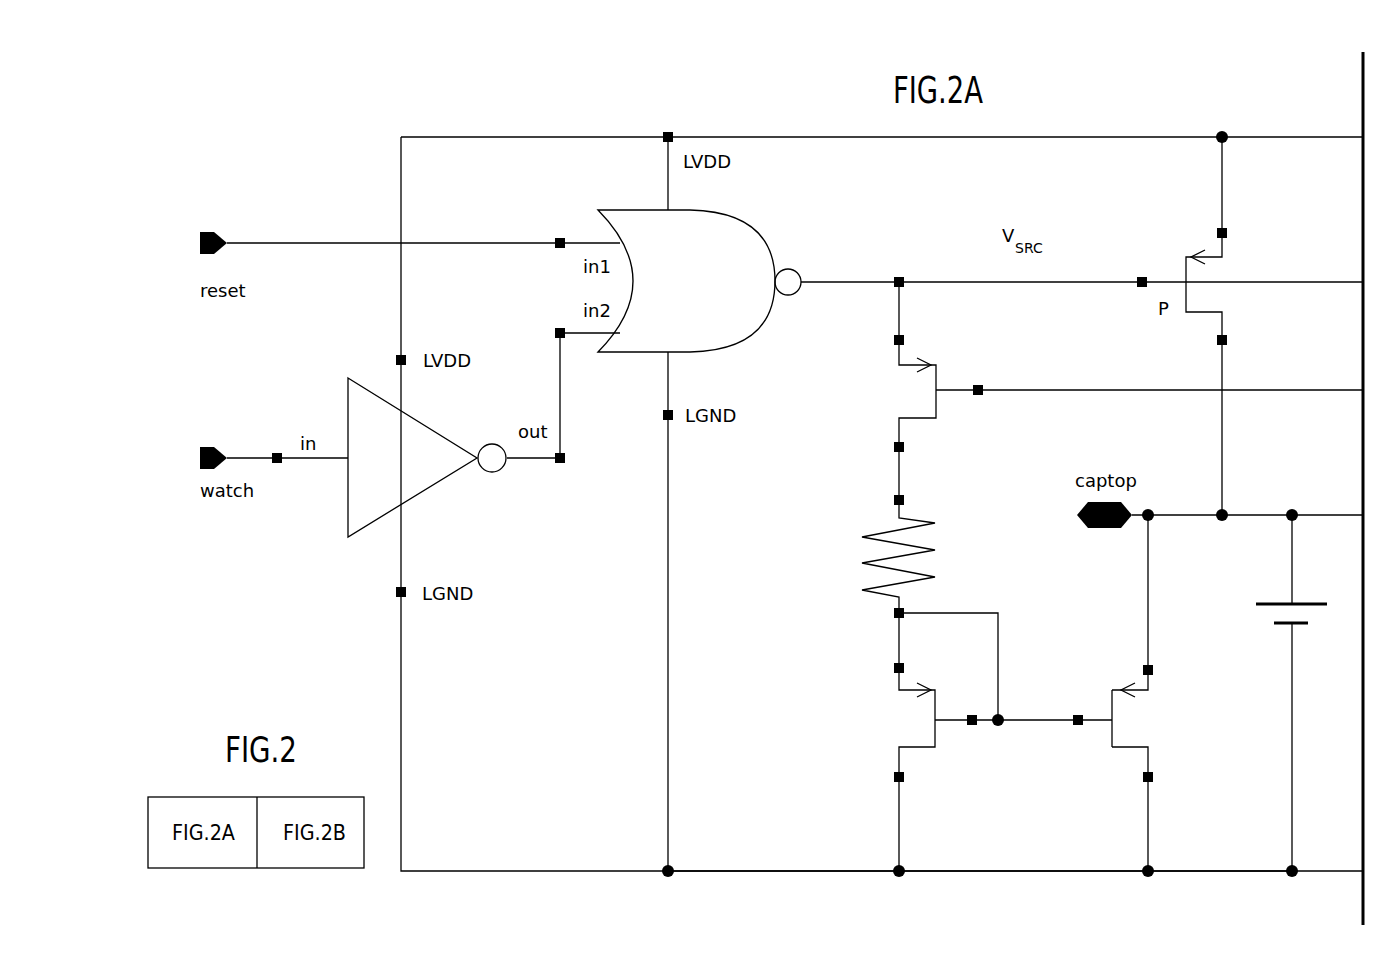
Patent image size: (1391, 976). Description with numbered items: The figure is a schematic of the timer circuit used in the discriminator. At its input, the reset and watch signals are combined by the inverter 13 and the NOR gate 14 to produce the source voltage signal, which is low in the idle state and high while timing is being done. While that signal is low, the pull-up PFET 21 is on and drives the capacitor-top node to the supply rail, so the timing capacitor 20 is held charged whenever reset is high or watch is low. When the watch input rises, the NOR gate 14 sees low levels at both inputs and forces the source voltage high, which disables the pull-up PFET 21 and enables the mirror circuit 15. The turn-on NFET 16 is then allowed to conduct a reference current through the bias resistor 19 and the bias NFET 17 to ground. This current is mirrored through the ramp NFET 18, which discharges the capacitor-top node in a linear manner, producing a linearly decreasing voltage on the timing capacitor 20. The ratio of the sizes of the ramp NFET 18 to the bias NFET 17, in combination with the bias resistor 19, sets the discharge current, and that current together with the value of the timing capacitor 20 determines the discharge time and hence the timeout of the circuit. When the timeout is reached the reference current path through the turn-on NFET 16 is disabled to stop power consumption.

The inverter TINV1 13 is at (430, 427).
The NOR gate TOR 14 is at (745, 228).
The mirror circuit 15 is at (678, 698).
The NFET Mton 16 is at (776, 445).
The NFET Mbias 17 is at (757, 780).
The NFET Mramp 18 is at (1064, 787).
The resistor Rbias 19 is at (782, 585).
The timing capacitor Ctime 20 is at (1268, 597).
The PFET Mpullp 21 is at (1215, 233).